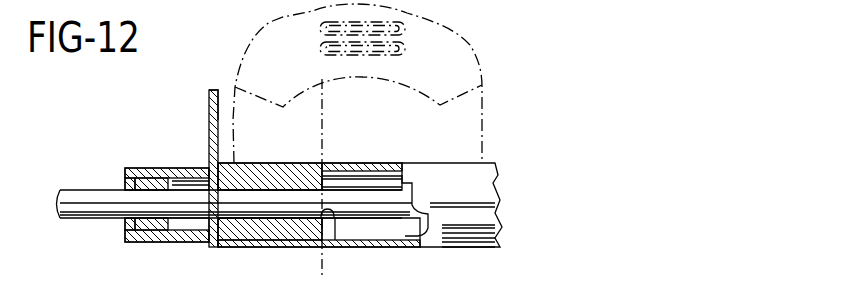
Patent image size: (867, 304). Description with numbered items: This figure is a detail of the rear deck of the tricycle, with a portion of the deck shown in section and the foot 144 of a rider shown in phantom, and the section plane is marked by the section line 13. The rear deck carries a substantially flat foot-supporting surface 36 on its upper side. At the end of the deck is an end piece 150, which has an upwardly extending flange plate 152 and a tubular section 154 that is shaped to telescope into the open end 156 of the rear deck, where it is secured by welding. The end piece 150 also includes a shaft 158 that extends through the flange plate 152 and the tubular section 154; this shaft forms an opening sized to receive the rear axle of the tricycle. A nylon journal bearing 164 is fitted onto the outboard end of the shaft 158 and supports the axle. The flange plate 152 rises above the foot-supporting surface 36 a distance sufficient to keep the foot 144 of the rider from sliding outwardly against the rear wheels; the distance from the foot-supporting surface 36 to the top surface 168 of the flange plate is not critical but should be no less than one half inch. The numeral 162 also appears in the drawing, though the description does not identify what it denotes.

The section line 13- 13 is at (322, 79).
The foot-supporting surface 36 is at (436, 163).
The foot 144 is at (467, 68).
The end piece 150 is at (190, 163).
The flange plate 152 is at (210, 114).
The tubular section 154 is at (240, 233).
The open end 156 is at (357, 228).
The shaft 158 is at (182, 241).
The cable 162 is at (407, 210).
The nylon journal bearing 164 is at (128, 226).
The top surface 168 is at (218, 90).